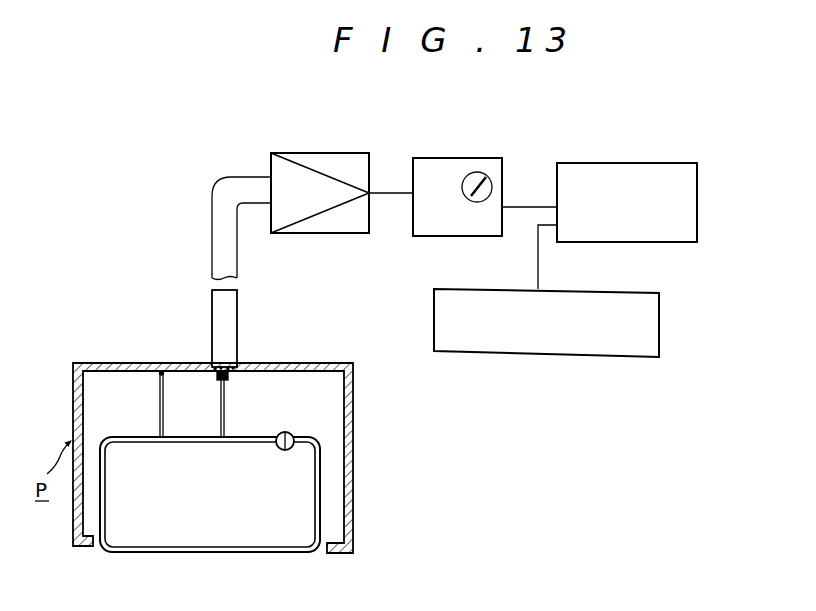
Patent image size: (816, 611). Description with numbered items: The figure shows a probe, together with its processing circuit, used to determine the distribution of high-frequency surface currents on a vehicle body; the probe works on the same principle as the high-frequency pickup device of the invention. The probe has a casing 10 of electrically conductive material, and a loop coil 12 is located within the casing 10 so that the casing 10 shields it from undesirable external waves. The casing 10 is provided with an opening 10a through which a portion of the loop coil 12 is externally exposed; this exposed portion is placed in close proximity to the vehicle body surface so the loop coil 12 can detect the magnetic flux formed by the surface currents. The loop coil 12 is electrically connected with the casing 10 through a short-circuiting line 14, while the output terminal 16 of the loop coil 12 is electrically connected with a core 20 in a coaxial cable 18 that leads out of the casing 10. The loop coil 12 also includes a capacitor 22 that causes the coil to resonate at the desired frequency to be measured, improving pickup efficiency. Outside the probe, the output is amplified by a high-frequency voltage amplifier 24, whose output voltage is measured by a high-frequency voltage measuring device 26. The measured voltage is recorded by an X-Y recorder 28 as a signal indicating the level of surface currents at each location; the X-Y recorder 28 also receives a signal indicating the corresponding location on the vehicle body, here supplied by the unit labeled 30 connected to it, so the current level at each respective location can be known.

The casing 10 is at (353, 458).
The opening 10a is at (326, 550).
The loop coil 12 is at (322, 494).
The short-circuiting line 14 is at (159, 397).
The output terminal 16 is at (220, 402).
The coaxial cable 18 is at (234, 333).
The core 20 is at (229, 381).
The capacitor 22 is at (288, 432).
The high-frequency voltage amplifier 24 is at (306, 153).
The high-frequency voltage measuring device 26 is at (443, 158).
The X-Y recorder 28 is at (609, 163).
The potentiometer 30 is at (521, 355).